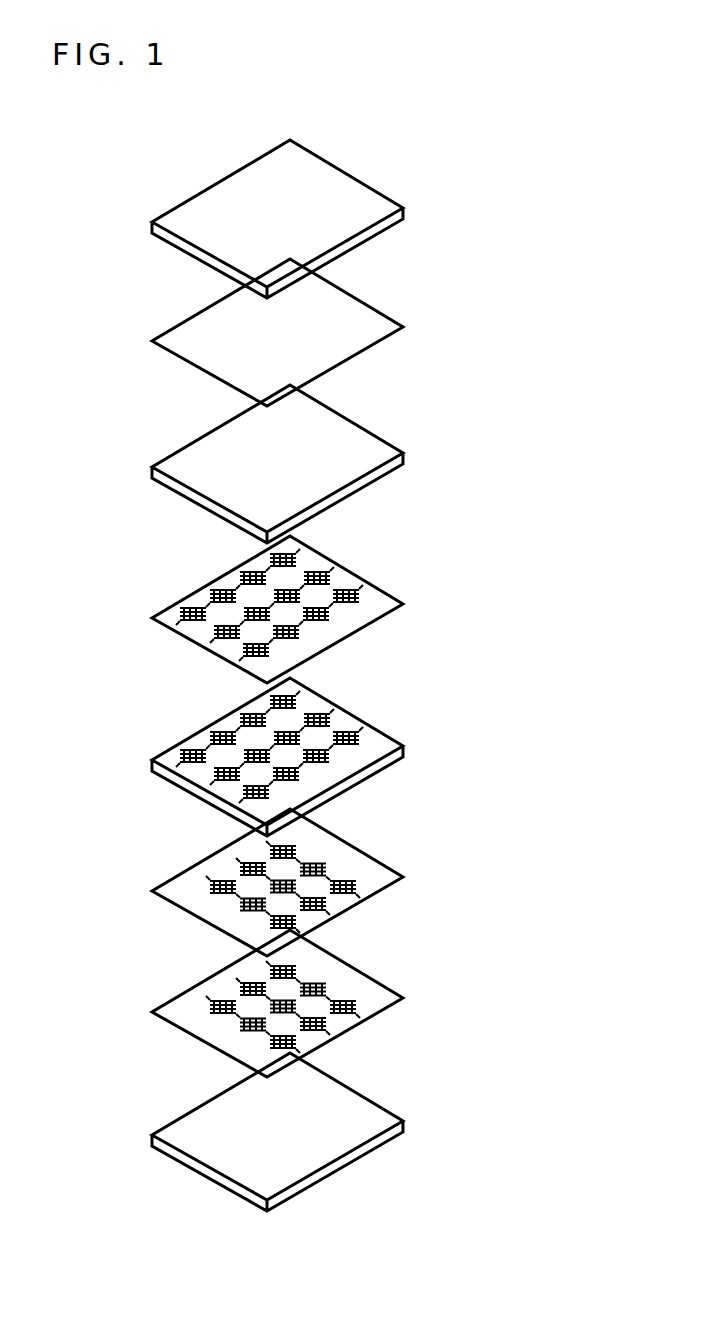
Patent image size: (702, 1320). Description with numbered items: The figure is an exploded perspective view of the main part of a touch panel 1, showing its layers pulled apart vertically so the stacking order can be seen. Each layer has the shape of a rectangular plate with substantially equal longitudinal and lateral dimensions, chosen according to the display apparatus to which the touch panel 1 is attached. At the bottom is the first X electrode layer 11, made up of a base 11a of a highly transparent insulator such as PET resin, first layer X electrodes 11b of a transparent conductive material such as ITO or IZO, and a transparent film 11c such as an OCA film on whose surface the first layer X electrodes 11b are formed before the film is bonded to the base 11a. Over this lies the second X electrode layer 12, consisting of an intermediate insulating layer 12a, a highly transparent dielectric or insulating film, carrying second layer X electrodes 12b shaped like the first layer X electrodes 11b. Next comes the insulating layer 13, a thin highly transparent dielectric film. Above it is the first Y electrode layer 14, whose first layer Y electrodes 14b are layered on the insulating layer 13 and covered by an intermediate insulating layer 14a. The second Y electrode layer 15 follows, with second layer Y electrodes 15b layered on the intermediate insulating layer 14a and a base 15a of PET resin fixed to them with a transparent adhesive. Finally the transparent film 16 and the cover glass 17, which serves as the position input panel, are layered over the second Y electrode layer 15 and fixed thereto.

The touch panel 1 is at (566, 170).
The first X electrode layer 11 is at (362, 1070).
The base 11a is at (329, 1132).
The first layer X electrodes 11b is at (330, 1035).
The transparent film 11c is at (358, 979).
The second X electrode layer 12 is at (362, 882).
The intermediate insulating layer 12a is at (358, 858).
The second layer X electrodes 12b is at (330, 915).
The insulating layer 13 is at (370, 770).
The first Y electrode layer 14 is at (362, 669).
The intermediate insulating layer 14a is at (373, 615).
The first layer Y electrodes 14b is at (290, 690).
The second Y electrode layer 15 is at (362, 523).
The base 15a is at (367, 482).
The second layer Y electrodes 15b is at (290, 548).
The transparent film 16 is at (360, 315).
The cover glass 17 is at (348, 195).